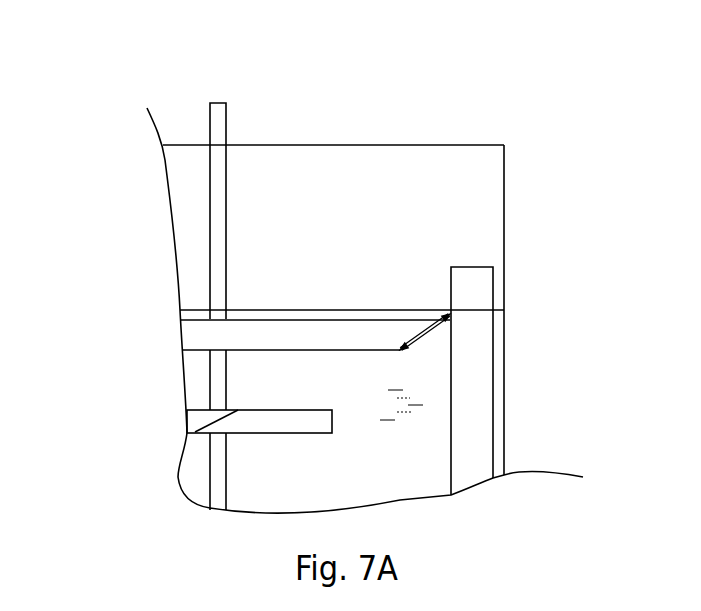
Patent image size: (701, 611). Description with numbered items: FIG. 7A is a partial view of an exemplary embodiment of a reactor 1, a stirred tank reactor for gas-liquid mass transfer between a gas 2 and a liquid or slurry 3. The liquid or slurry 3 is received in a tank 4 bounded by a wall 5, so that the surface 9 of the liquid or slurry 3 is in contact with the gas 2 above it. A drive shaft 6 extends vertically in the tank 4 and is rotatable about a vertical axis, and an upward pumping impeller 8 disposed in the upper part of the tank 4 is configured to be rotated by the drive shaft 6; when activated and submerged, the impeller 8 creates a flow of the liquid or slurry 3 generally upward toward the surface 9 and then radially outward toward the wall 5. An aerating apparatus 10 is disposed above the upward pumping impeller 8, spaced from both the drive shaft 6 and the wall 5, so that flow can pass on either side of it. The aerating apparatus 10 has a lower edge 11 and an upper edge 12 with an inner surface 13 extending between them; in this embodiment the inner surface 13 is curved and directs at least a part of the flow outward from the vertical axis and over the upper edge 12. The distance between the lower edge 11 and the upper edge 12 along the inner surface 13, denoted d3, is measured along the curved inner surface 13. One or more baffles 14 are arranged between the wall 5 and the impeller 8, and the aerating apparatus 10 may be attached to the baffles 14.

The reactor 1 is at (123, 135).
The gas 2 is at (458, 212).
The liquid or slurry 3 is at (363, 488).
The tank 4 is at (275, 145).
The wall 5 is at (504, 175).
The drive shaft 6 is at (217, 223).
The upward pumping impeller 8 is at (325, 421).
The surface 9 is at (233, 310).
The aerating apparatus 10 is at (239, 333).
The lower edge 11 is at (401, 350).
The upper edge 12 is at (450, 310).
The inner surface 13 is at (442, 320).
The baffle 14 is at (473, 457).
The distance along the inner surface d3 is at (411, 331).